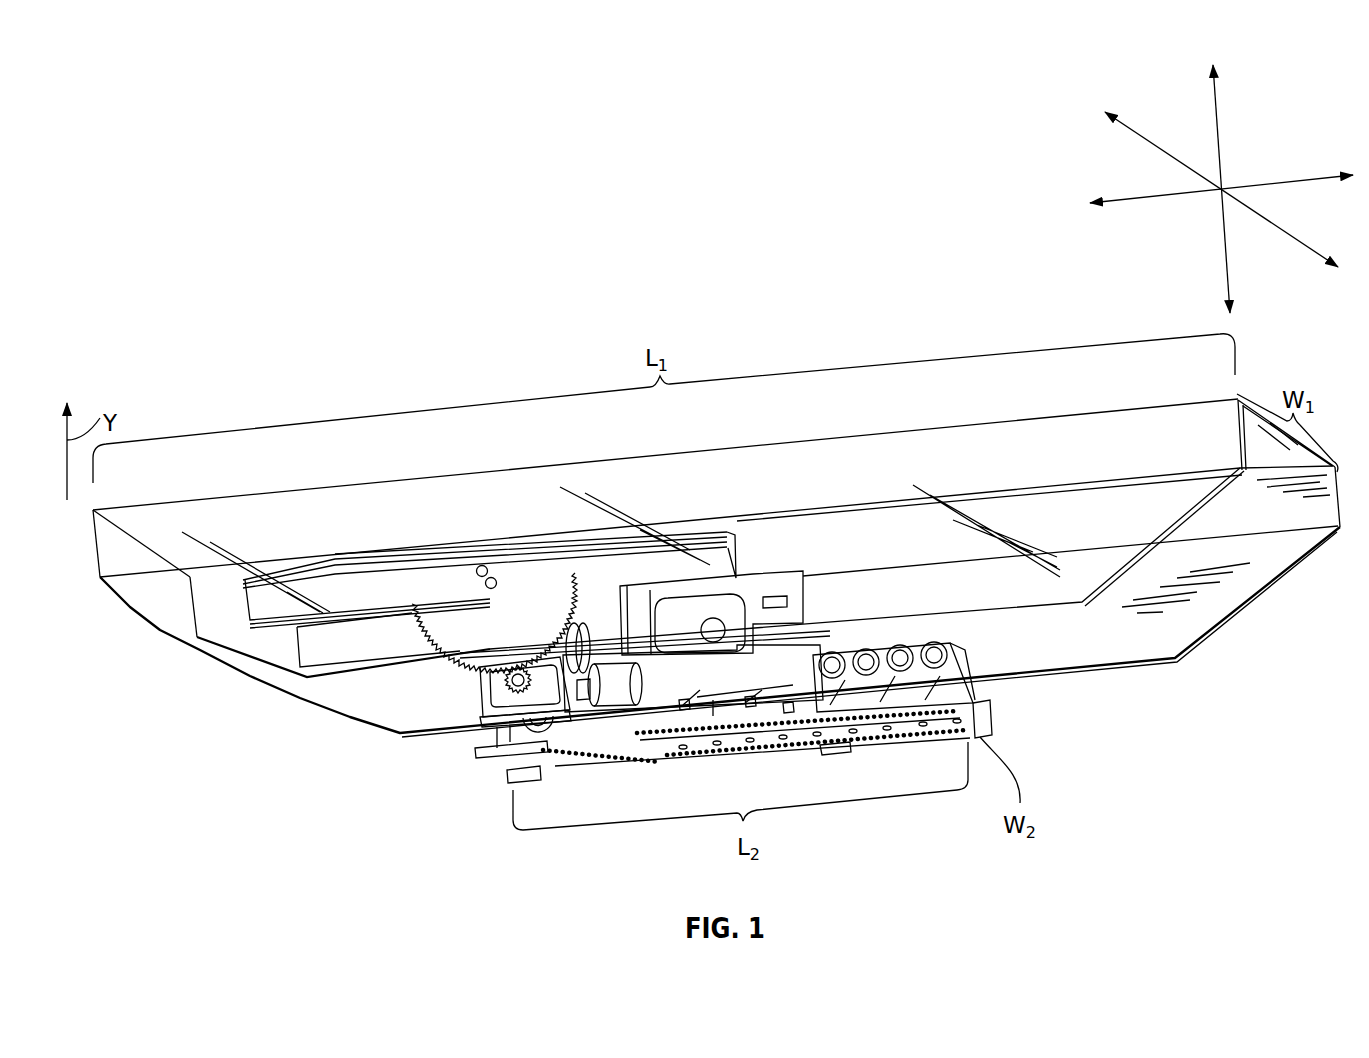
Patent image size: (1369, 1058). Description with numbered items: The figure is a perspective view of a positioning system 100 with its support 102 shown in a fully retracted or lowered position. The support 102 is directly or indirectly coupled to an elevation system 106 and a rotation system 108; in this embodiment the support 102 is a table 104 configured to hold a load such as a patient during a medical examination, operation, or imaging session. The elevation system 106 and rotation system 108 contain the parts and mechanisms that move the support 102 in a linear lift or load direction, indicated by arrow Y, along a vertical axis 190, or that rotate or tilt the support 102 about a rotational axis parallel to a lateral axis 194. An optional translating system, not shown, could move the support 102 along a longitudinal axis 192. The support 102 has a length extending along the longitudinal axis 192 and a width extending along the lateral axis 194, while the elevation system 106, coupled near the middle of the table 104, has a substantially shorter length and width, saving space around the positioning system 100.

The positioning system 100 is at (187, 355).
The support 102 is at (1118, 407).
The table 104 is at (923, 442).
The elevation system 106 is at (608, 779).
The rotation system 108 is at (326, 693).
The vertical axis 190 is at (1218, 107).
The longitudinal axis 192 is at (1277, 182).
The lateral axis 194 is at (1148, 139).